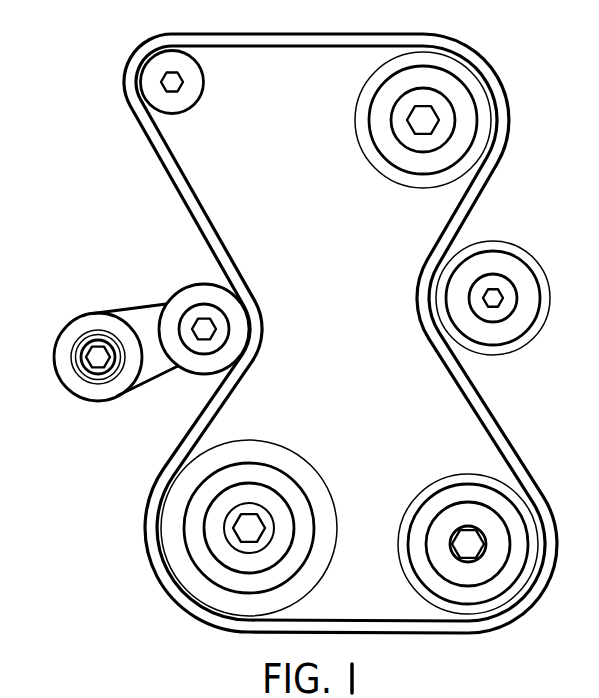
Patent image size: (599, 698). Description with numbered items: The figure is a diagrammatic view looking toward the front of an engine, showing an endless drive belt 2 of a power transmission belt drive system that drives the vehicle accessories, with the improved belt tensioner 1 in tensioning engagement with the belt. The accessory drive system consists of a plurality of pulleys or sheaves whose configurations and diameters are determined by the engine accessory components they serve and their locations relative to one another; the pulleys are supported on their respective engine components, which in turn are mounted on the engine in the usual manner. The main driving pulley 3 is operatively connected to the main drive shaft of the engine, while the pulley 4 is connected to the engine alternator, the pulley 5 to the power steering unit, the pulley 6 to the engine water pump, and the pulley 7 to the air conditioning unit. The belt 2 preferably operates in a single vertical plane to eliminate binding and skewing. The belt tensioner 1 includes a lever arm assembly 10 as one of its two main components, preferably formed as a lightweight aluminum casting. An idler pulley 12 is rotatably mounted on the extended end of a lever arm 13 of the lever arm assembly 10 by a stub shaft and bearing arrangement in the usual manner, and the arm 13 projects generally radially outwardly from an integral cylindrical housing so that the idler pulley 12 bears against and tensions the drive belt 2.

The belt tensioner 1 is at (145, 349).
The endless drive belt 2 is at (492, 443).
The main driving pulley 3 is at (275, 458).
The pulley 4 is at (192, 85).
The pulley 5 is at (477, 107).
The pulley 6 is at (525, 267).
The pulley 7 is at (418, 505).
The lever arm assembly 10 is at (139, 398).
The idler pulley 12 is at (192, 297).
The lever arm 13 is at (145, 328).